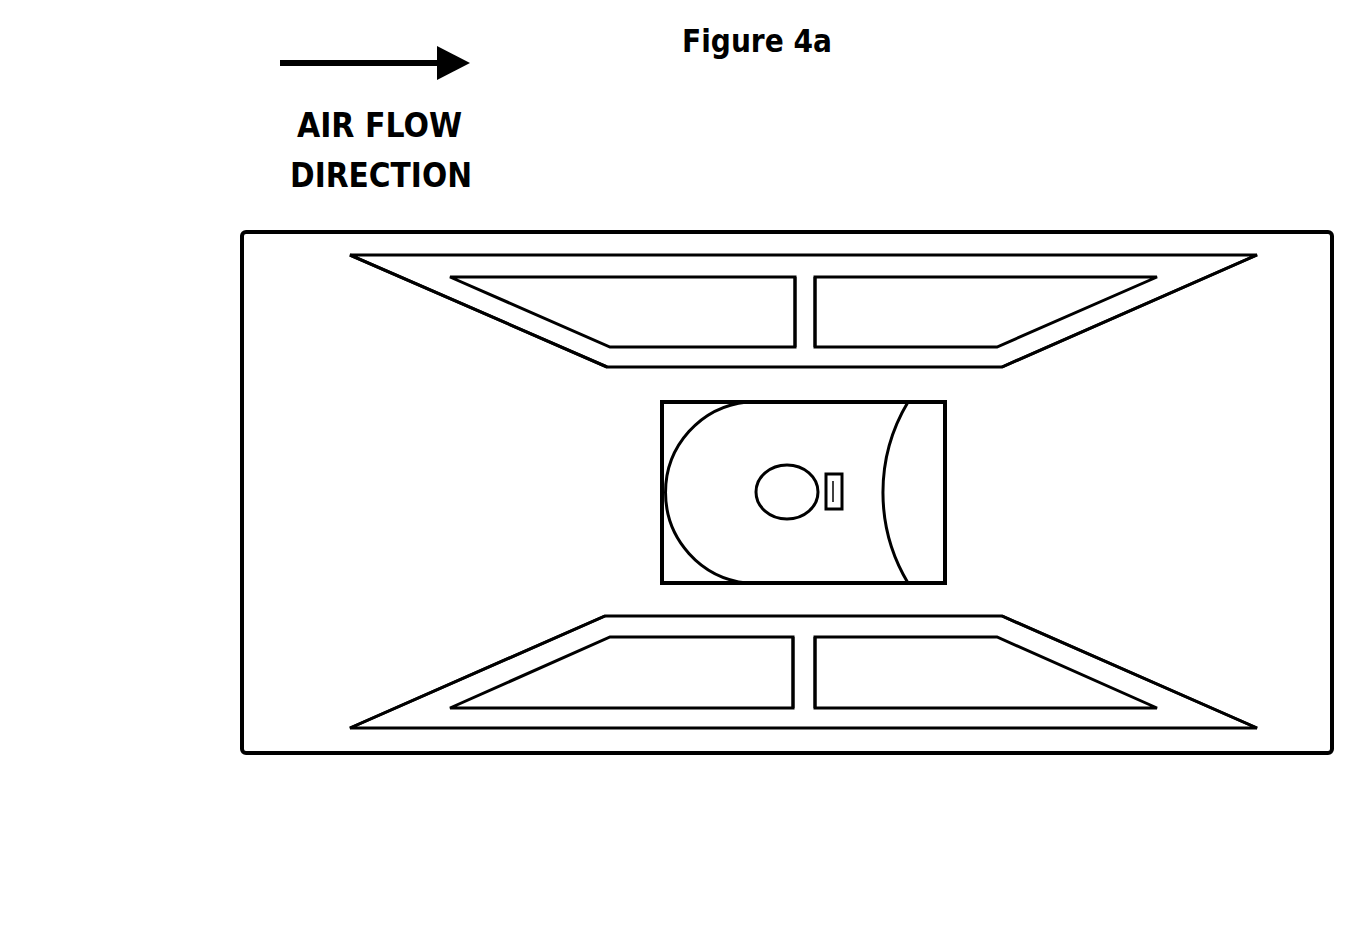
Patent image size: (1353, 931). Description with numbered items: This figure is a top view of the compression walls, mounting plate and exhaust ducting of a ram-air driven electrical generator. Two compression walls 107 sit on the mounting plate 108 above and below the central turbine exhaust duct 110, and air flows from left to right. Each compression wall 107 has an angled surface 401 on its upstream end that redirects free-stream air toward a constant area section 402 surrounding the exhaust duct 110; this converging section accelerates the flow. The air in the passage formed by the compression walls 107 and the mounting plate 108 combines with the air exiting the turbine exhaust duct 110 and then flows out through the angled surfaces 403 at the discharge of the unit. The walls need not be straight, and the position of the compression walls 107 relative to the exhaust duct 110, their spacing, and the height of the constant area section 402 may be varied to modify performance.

The compression wall 107 is at (935, 253).
The mounting plate 108 is at (252, 363).
The turbine exhaust duct 110 is at (702, 460).
The angled surface 401 is at (443, 310).
The constant area section 402 is at (785, 616).
The angled surfaces 403 is at (1125, 337).